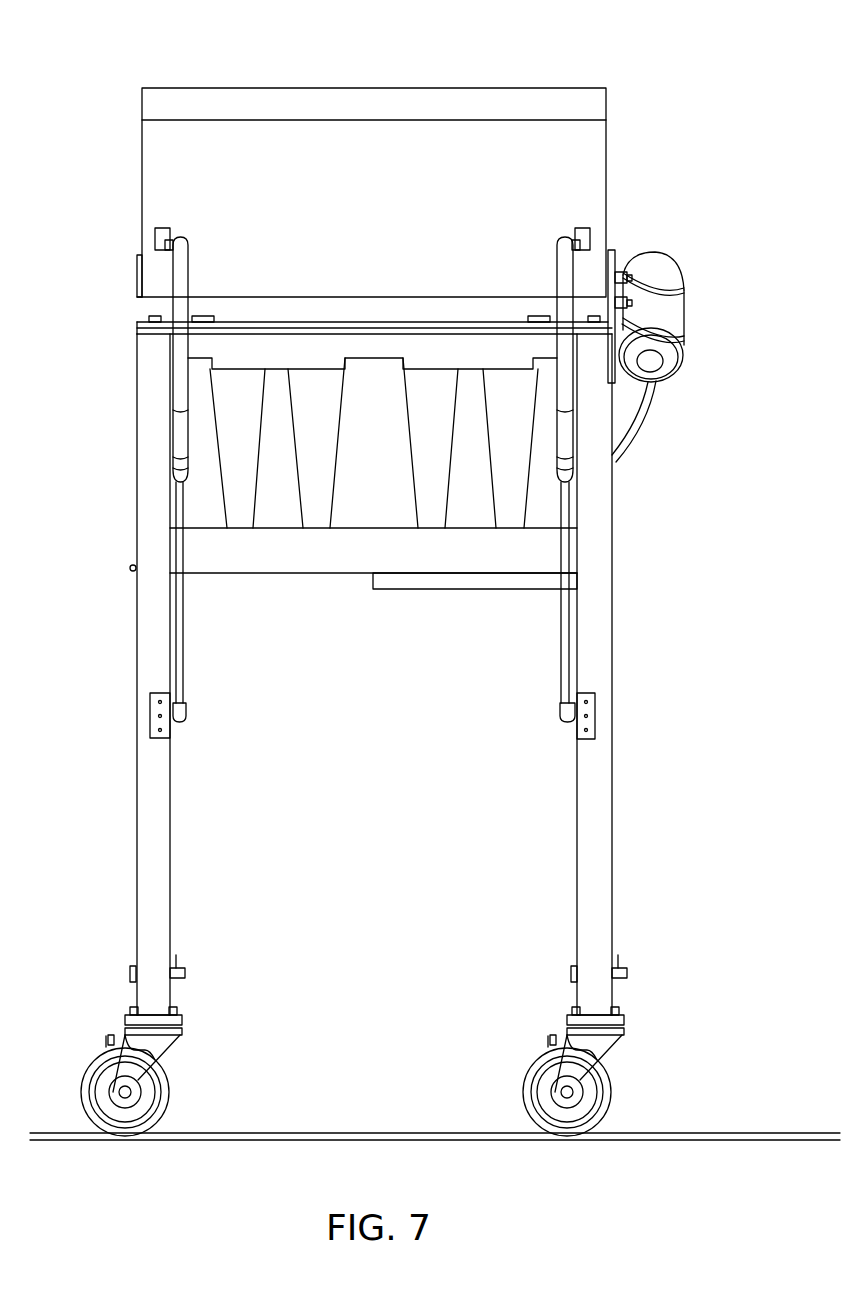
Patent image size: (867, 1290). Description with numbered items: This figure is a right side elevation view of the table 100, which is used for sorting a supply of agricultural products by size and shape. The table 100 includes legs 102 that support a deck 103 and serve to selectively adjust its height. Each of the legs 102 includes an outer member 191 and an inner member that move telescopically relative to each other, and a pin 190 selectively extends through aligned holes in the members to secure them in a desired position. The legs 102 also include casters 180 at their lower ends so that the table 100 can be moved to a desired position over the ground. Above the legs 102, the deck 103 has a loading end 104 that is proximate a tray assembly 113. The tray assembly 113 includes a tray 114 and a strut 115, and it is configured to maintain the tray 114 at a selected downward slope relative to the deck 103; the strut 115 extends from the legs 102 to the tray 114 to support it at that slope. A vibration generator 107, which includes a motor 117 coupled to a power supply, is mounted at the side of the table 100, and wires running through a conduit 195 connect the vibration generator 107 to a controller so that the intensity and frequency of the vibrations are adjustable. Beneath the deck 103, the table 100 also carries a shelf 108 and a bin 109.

The table 100 is at (583, 60).
The tray assembly 113 is at (130, 152).
The tray 114 is at (537, 172).
The deck 103 is at (133, 273).
The loading end 104 is at (300, 308).
The strut 115 is at (185, 276).
The motor 117 is at (666, 270).
The vibration generator 107 is at (708, 322).
The conduit 195 is at (628, 402).
The legs 102 is at (622, 560).
The outer member 191 is at (606, 670).
The pin 190 is at (628, 970).
The bin 109 is at (508, 515).
The shelf 108 is at (297, 553).
The casters 180 is at (543, 1110).